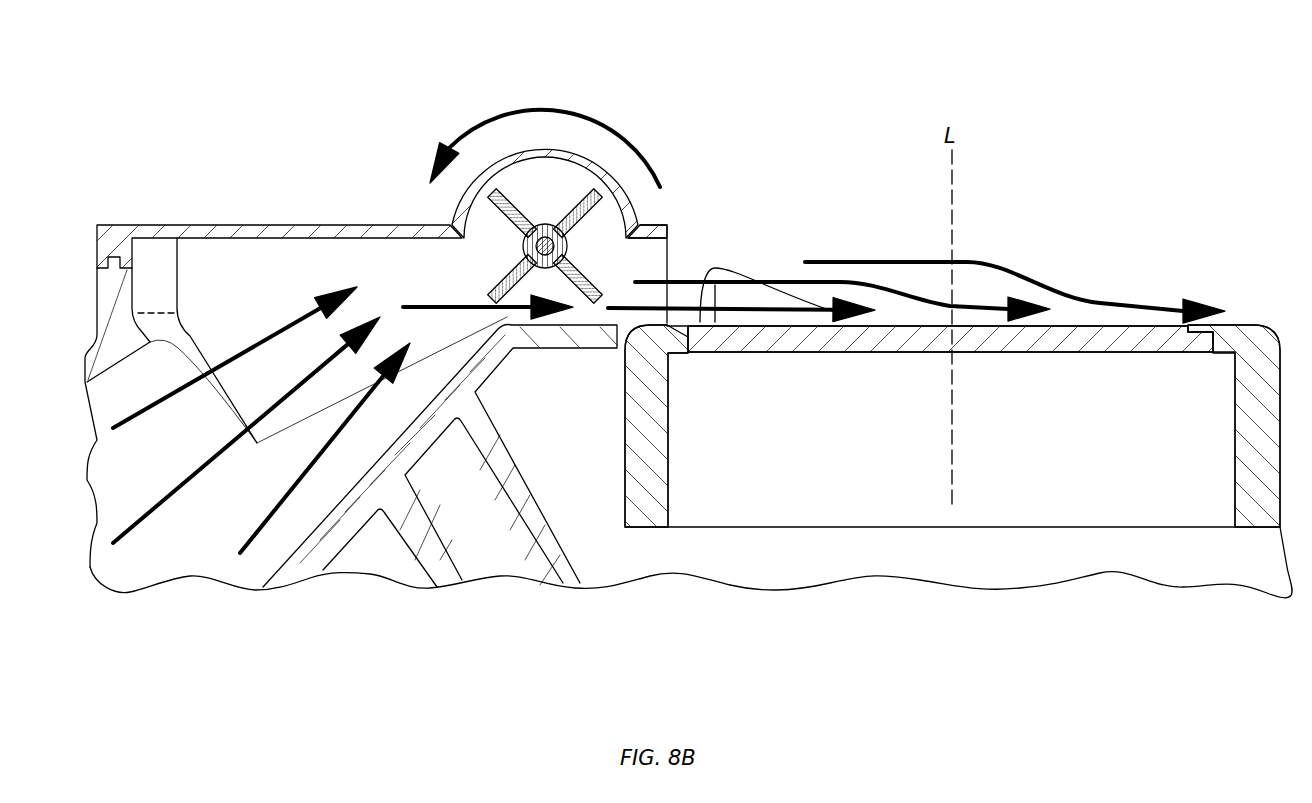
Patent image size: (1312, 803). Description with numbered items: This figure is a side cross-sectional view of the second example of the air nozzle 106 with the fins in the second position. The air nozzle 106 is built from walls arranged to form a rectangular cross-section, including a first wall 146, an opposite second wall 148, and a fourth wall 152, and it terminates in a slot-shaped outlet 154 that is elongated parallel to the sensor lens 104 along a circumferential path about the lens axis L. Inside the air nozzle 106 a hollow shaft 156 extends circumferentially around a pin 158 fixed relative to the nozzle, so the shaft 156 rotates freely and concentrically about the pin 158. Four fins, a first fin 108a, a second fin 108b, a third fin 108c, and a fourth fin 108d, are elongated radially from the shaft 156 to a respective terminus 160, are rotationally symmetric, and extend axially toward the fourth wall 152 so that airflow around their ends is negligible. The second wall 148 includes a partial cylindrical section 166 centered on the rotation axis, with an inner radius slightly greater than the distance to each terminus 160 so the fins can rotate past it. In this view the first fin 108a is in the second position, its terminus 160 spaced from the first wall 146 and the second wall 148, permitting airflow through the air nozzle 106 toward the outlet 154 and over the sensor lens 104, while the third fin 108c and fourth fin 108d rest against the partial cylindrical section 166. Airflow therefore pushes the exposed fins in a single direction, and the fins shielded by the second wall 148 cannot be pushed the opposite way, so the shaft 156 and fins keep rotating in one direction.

The sensor lens 104 is at (1086, 322).
The air nozzle 106 is at (233, 219).
The first fin 108a is at (592, 212).
The second fin 108b is at (512, 272).
The third fin 108c is at (513, 200).
The fourth fin 108d is at (600, 206).
The first wall 146 is at (520, 337).
The second wall 148 is at (283, 224).
The fourth wall 152 is at (345, 262).
The outlet 154 is at (668, 260).
The shaft 156 is at (561, 182).
The pin 158 is at (522, 239).
The terminus 160 is at (449, 148).
The partial cylindrical section 166 is at (538, 152).